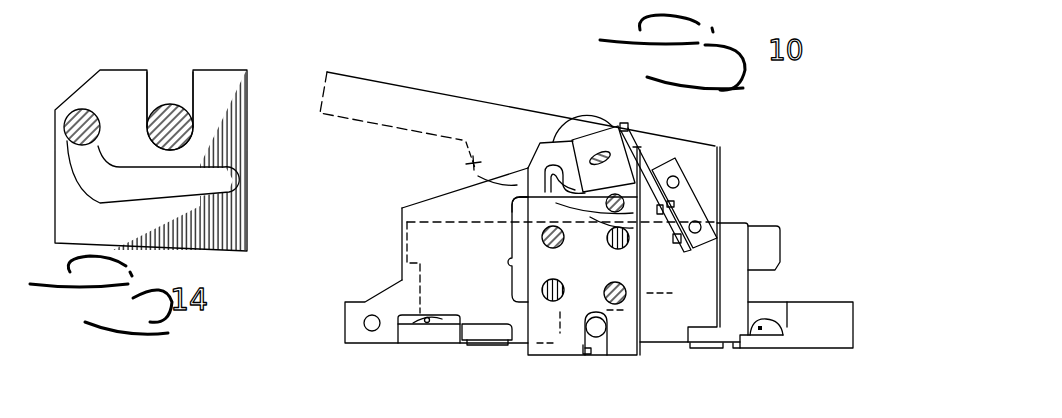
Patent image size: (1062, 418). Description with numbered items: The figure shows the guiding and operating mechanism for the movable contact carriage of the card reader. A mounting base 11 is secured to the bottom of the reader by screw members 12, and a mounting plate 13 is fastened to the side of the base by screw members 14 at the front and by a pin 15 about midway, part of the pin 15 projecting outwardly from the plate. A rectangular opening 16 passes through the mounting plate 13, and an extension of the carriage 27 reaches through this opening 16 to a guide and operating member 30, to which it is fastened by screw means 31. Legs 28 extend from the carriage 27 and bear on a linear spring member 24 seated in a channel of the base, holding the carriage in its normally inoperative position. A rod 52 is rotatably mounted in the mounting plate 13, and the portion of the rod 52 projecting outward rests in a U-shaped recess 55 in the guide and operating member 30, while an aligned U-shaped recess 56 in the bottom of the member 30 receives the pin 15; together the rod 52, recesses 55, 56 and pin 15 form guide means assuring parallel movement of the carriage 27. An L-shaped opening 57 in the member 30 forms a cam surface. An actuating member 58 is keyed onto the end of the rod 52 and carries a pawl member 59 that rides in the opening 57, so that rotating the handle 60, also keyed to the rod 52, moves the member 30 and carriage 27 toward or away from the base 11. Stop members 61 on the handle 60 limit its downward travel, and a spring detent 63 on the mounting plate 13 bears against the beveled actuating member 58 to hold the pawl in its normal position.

In FIG. 10, the mounting base 11 is at (838, 308).
In FIG. 10, the screw members 12 is at (780, 322).
In FIG. 10, the mounting plates 13 is at (702, 168).
In FIG. 10, the screw members 14 is at (372, 315).
In FIG. 10, the pins 15 is at (600, 331).
In FIG. 10, the rectangular opening 16 is at (510, 263).
In FIG. 10, the linear spring member 24 is at (480, 346).
In FIG. 10, the carriage 27 is at (735, 233).
In FIG. 10, the legs 28 is at (739, 300).
In FIG. 14, the guide and operating member 30 is at (218, 135).
In FIG. 10, the guide and operating member 30 is at (628, 331).
In FIG. 10, the screw means 31 is at (612, 288).
In FIG. 14, the rod 52 is at (150, 122).
In FIG. 14, the U-shaped recesses 55 is at (191, 82).
In FIG. 10, the U-shaped recesses 56 is at (590, 356).
In FIG. 14, the L-shaped openings 57 is at (77, 176).
In FIG. 10, the L-shaped openings 57 is at (513, 198).
In FIG. 10, the actuating members 58 is at (600, 140).
In FIG. 14, the pawl member 59 is at (72, 127).
In FIG. 10, the pawl member 59 is at (616, 205).
In FIG. 10, the handle 60 is at (373, 80).
In FIG. 10, the stop members 61 is at (466, 165).
In FIG. 10, the spring detent 63 is at (648, 160).